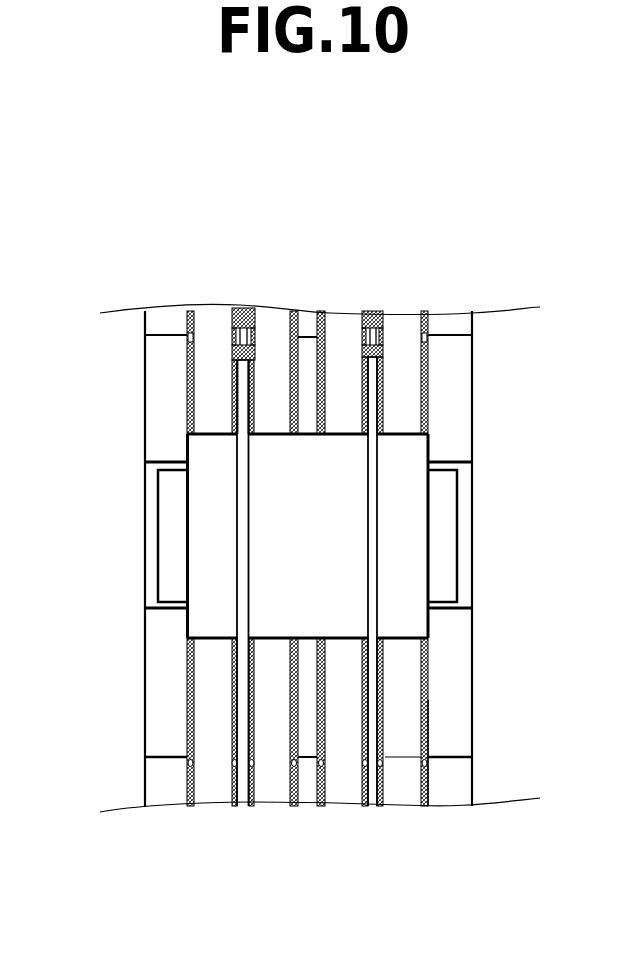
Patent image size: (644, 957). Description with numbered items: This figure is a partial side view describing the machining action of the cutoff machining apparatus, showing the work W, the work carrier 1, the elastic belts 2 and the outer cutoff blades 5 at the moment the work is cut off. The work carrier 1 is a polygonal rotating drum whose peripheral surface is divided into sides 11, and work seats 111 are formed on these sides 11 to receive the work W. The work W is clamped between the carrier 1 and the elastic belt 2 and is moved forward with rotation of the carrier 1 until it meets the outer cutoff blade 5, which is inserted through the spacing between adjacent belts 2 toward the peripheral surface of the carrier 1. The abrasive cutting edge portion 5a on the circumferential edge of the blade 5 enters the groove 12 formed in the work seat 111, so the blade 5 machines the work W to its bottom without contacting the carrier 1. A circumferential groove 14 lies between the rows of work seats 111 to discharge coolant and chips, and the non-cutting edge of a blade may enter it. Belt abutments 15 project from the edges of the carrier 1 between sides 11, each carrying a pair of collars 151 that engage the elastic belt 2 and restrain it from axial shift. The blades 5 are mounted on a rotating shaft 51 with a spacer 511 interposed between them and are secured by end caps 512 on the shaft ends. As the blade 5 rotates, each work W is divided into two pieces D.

The work carrier 1 is at (443, 638).
The elastic belt 2 is at (412, 728).
The outer cutoff blade 5 is at (240, 400).
The abrasive cutting edge portion 5a is at (243, 372).
The surface side 11 is at (447, 682).
The groove 12 is at (372, 320).
The circumferential groove 14 is at (306, 350).
The belt abutment 15 is at (433, 765).
The rotating shaft 51 is at (173, 543).
The work seat 111 is at (430, 712).
The collar 151 is at (425, 762).
The spacer 511 is at (305, 620).
The end cap 512 is at (212, 578).
The piece D is at (428, 663).
The work W is at (430, 370).